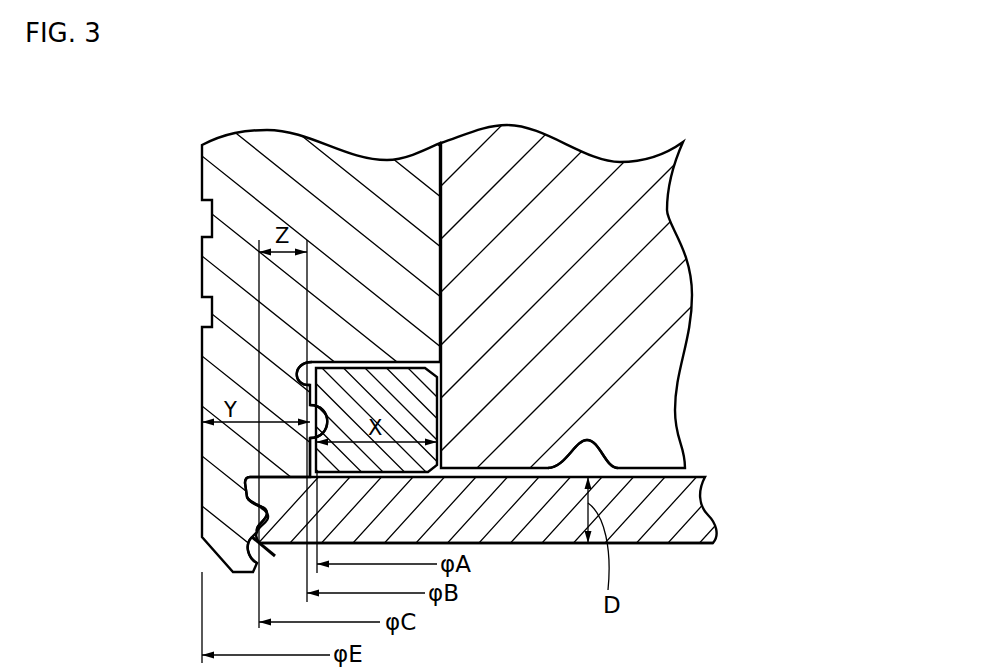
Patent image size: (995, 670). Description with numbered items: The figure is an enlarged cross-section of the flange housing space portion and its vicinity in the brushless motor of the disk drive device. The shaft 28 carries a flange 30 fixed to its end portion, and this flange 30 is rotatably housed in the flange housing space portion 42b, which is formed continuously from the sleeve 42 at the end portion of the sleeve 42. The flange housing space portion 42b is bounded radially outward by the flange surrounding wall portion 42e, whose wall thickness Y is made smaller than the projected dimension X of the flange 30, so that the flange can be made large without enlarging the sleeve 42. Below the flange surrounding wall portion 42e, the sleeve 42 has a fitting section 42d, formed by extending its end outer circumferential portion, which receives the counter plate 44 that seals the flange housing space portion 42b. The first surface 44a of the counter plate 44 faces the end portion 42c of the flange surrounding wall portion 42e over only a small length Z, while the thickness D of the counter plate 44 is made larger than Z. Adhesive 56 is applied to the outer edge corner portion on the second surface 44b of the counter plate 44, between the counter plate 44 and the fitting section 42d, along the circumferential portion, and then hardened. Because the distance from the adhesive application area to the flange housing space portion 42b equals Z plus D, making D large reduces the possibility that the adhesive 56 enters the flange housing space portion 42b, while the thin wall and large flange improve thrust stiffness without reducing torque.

The shaft 28 is at (600, 167).
The flange 30 is at (380, 393).
The sleeve 42 is at (252, 172).
The flange housing space portion 42b is at (307, 401).
The end portion of the flange surrounding wall portion 42c is at (303, 465).
The fitting section 42d is at (263, 507).
The flange surrounding wall portion 42e is at (300, 392).
The counter plate 44 is at (668, 520).
The first surface of the counter plate 44a is at (583, 442).
The second surface of the counter plate 44b is at (526, 547).
The adhesive 56 is at (272, 553).